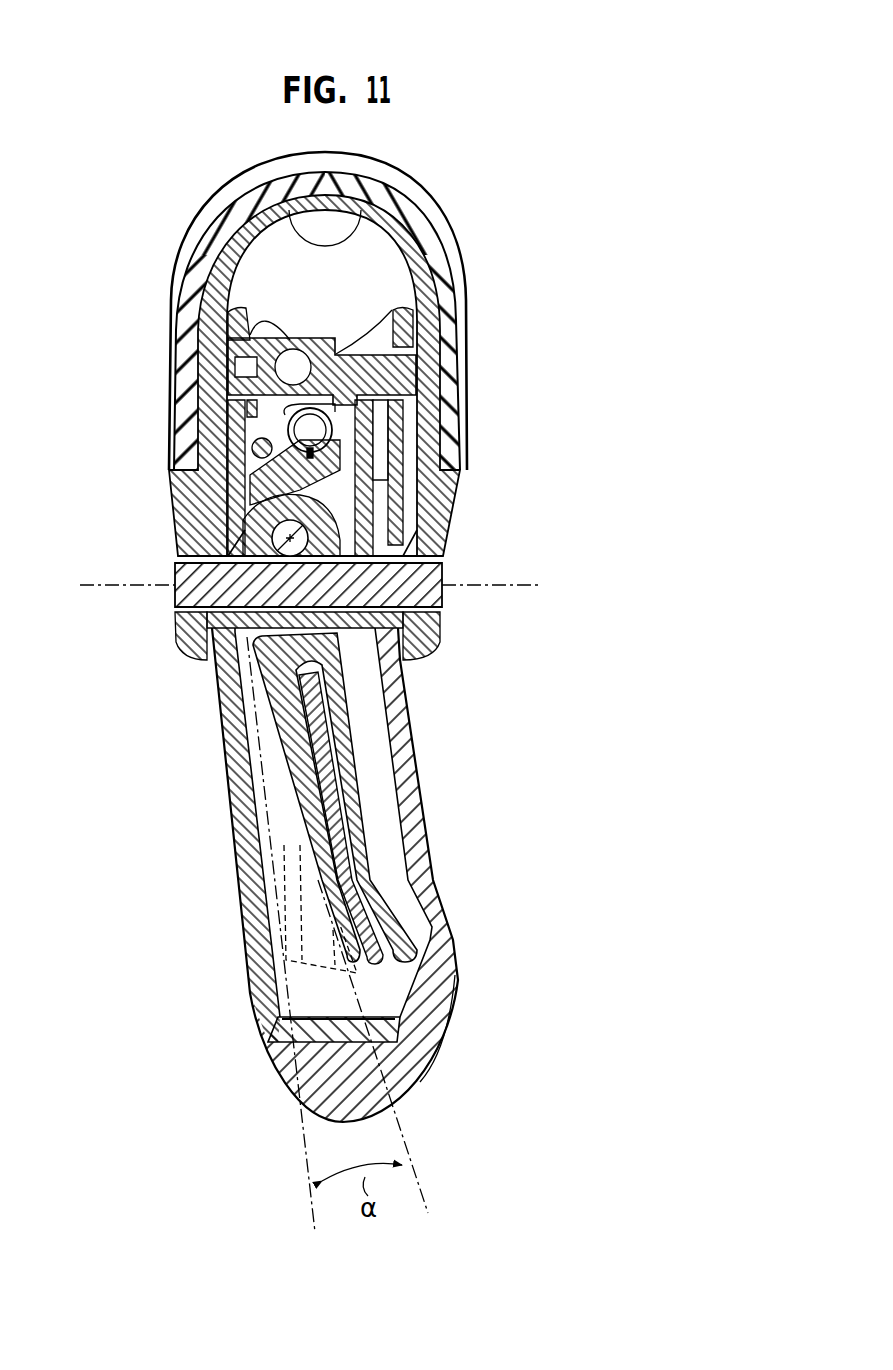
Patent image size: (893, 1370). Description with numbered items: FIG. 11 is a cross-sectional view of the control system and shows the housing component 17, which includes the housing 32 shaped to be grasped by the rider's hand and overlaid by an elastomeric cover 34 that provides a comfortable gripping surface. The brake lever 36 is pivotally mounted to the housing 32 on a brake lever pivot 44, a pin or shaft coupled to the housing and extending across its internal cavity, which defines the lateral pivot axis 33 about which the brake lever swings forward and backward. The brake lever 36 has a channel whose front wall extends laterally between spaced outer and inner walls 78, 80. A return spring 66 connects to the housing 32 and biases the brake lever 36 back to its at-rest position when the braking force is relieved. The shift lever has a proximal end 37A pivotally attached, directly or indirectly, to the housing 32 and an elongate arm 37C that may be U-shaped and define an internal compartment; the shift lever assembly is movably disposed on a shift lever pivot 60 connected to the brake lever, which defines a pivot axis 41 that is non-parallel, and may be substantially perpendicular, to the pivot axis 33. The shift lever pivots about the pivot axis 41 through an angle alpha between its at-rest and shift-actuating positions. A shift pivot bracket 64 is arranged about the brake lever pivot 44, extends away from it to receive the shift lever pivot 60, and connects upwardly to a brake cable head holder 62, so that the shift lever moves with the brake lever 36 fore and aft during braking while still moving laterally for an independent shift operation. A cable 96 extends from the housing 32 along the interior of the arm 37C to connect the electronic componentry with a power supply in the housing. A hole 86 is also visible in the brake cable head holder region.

The housing component 17 is at (143, 305).
The housing 32 is at (430, 338).
The pivot axis 33 is at (518, 587).
The cover 34 is at (436, 192).
The brake lever 36 is at (398, 735).
The proximal end 37A is at (253, 477).
The elongate arm 37C is at (373, 814).
The pivot axis 41 is at (287, 538).
The brake lever pivot 44 is at (436, 575).
The shift lever pivot 60 is at (262, 512).
The brake cable head holder 62 is at (295, 338).
The shift pivot bracket 64 is at (365, 518).
The return spring 66 is at (335, 428).
The outer wall 78 is at (430, 867).
The inner wall 80 is at (237, 855).
The bore 86 is at (300, 360).
The cable 96 is at (373, 910).